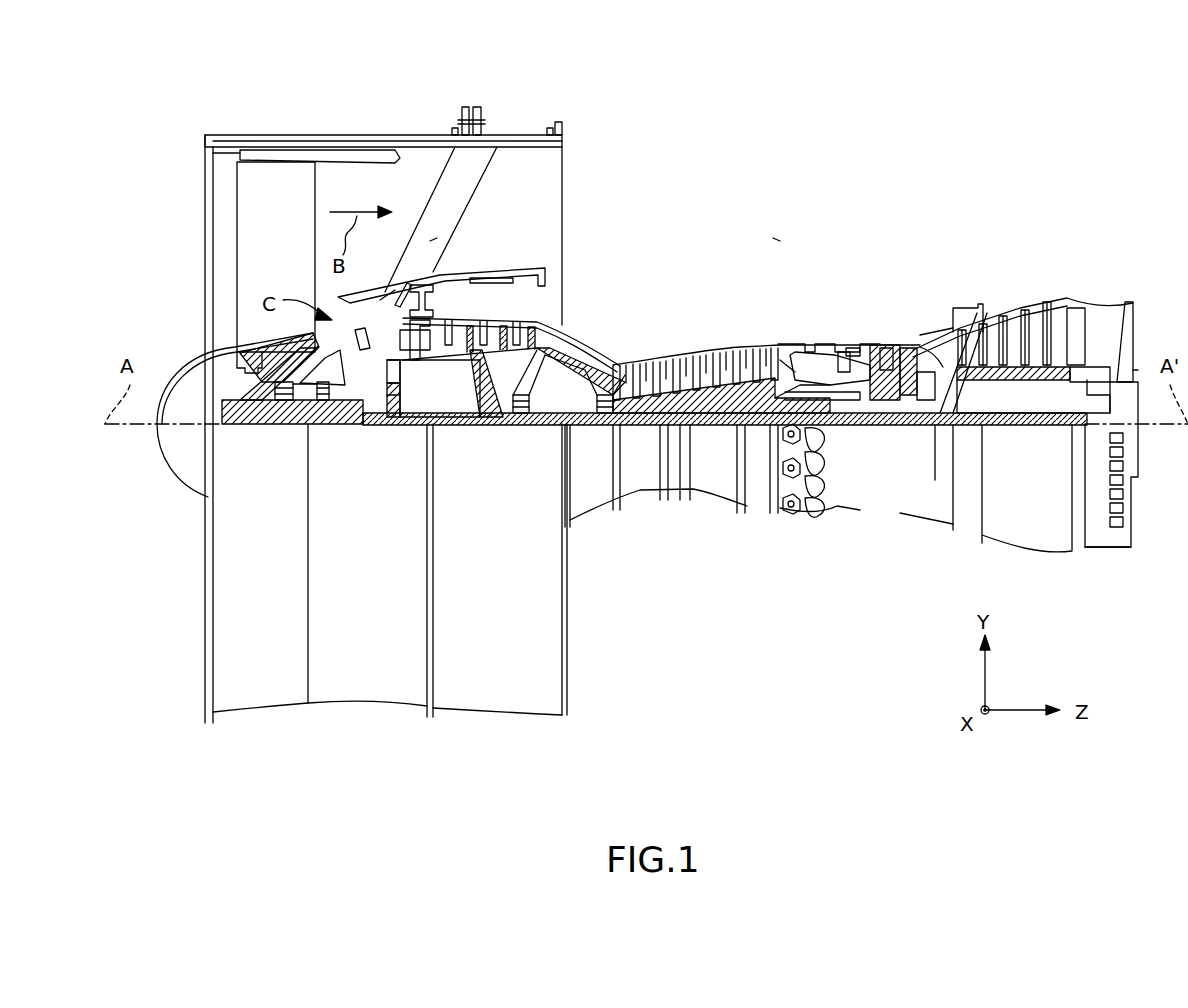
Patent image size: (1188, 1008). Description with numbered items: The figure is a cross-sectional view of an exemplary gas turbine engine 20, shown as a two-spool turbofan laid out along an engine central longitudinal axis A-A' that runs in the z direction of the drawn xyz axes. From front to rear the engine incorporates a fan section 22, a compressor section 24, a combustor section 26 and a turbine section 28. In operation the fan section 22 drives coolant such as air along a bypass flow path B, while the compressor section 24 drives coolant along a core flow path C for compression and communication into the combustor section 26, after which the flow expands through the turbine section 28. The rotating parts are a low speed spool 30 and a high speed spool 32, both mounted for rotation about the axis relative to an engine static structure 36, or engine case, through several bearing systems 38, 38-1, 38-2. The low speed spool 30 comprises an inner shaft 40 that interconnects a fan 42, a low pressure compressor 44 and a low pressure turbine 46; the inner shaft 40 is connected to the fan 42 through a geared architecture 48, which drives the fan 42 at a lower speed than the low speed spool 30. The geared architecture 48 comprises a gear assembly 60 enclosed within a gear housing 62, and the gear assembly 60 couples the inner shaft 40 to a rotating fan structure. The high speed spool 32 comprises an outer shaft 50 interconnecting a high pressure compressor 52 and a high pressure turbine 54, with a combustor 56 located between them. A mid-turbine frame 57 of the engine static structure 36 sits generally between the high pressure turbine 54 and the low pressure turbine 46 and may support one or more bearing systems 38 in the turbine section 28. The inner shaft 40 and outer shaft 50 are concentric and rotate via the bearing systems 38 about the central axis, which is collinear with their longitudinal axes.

The gas turbine engine 20 is at (873, 139).
The fan section 22 is at (400, 123).
The compressor section 24 is at (773, 238).
The combustor section 26 is at (875, 241).
The turbine section 28 is at (1070, 238).
The low speed spool 30 is at (718, 428).
The high speed spool 32 is at (772, 353).
The engine static structure 36 is at (182, 734).
The bearing system 38 is at (925, 431).
The bearing system 38-1 is at (275, 428).
The bearing system 38-2 is at (520, 430).
The inner shaft 40 is at (580, 431).
The fan 42 is at (275, 265).
The low pressure compressor 44 is at (500, 327).
The low pressure turbine 46 is at (1010, 304).
The geared architecture 48 is at (387, 447).
The outer shaft 50 is at (835, 407).
The high pressure compressor 52 is at (712, 371).
The high pressure turbine 54 is at (893, 346).
The combustor 56 is at (835, 346).
The mid-turbine frame 57 is at (935, 319).
The gear assembly 60 is at (405, 394).
The gear housing 62 is at (405, 371).